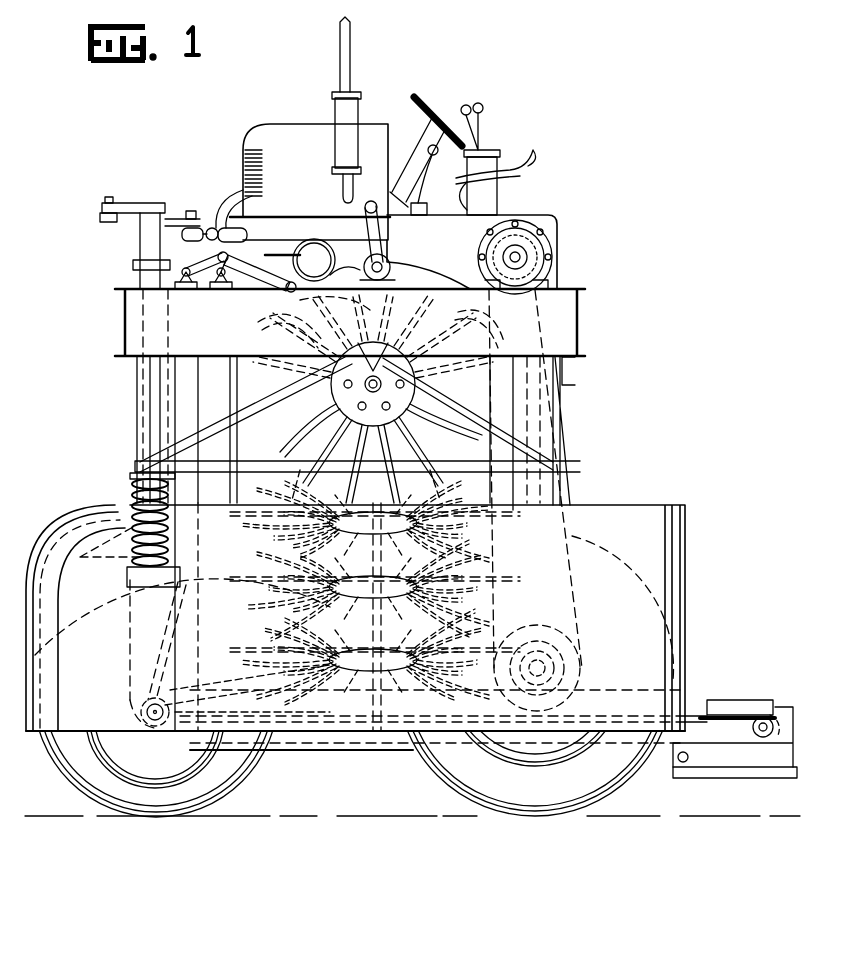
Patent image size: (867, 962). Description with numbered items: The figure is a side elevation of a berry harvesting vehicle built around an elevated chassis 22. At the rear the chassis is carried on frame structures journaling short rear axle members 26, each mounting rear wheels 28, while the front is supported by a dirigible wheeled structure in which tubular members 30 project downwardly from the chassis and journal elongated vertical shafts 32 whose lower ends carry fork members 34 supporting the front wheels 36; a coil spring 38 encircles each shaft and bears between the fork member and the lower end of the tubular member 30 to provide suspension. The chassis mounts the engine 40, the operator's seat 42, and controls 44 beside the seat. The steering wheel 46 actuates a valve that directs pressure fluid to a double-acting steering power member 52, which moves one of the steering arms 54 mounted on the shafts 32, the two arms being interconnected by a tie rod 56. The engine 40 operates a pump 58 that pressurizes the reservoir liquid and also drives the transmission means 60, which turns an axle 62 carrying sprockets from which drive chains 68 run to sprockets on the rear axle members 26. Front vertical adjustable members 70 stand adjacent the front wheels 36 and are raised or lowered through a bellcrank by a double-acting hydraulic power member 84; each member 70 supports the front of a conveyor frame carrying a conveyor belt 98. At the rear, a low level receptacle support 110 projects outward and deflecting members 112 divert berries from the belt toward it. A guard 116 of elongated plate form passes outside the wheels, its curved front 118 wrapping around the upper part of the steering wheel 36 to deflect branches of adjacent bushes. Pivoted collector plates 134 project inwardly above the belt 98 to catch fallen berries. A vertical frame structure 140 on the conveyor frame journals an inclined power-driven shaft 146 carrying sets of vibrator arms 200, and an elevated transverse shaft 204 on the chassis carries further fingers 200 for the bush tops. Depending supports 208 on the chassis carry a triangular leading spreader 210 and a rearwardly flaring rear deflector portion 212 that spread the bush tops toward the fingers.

The elevated chassis 22 is at (572, 313).
The rear axle member 26 is at (583, 660).
The rear wheel 28 is at (600, 775).
The tubular member 30 is at (150, 400).
The vertical shaft 32 is at (145, 243).
The fork member 34 is at (145, 590).
The front wheel 36 is at (133, 808).
The coil spring 38 is at (132, 485).
The engine 40 is at (285, 150).
The operator's seat 42 is at (505, 175).
The controls 44 is at (415, 195).
The steering wheel 46 is at (432, 105).
The double-acting steering power member 52 is at (238, 232).
The steering arm 54 is at (138, 205).
The tie rod 56 is at (97, 220).
The pump 58 is at (385, 258).
The drive transmission means 60 is at (466, 260).
The axle 62 is at (512, 272).
The drive chain 68 is at (550, 240).
The front vertical adjustable member 70 is at (185, 395).
The double-acting hydraulic power member 84 is at (235, 282).
The conveyor belt 98 is at (300, 745).
The receptacle support 110 is at (730, 770).
The deflecting member 112 is at (742, 710).
The guard 116 is at (678, 560).
The curved front of guard 118 is at (52, 535).
The collector plate 134 is at (233, 680).
The vertical frame structure 140 is at (500, 488).
The shaft 146 is at (380, 735).
The vibrator bush-contacting arm 200 is at (280, 310).
The elevated transverse shaft 204 is at (373, 384).
The depending support 208 is at (237, 437).
The leading deflector part 210 is at (113, 520).
The rear deflector portion 212 is at (588, 540).